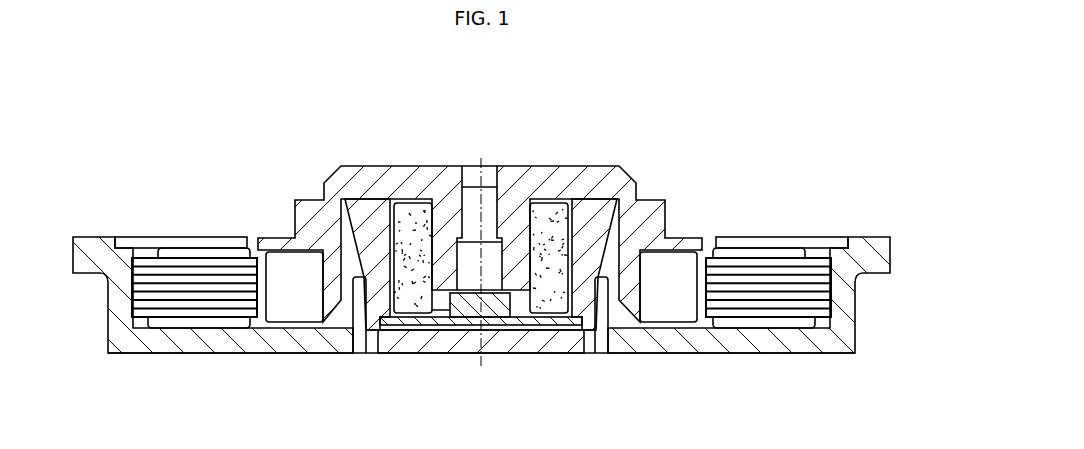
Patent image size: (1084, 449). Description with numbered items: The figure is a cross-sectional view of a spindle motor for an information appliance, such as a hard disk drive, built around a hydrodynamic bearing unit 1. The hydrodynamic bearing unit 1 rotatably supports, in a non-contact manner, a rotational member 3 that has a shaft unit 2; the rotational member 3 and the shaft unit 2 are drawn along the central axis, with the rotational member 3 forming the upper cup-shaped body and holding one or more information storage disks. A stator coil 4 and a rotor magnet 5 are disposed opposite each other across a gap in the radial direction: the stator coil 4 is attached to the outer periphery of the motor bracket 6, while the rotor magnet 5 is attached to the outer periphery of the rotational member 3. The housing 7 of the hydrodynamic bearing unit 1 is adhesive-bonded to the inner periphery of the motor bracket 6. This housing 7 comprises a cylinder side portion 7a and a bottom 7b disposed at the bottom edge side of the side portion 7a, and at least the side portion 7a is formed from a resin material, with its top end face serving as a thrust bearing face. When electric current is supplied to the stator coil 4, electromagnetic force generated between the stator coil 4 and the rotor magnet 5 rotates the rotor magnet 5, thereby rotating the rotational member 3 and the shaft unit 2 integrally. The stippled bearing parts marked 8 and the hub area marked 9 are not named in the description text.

The hydrodynamic bearing unit 1 is at (574, 158).
The shaft unit 2 is at (520, 242).
The rotational member 3 is at (386, 161).
The stator coil 4 is at (806, 253).
The rotor magnet 5 is at (678, 265).
The motor bracket 6 is at (191, 342).
The housing 7 is at (513, 362).
The side portion 7a is at (357, 300).
The bottom 7b is at (462, 343).
The bearing 8 is at (557, 296).
The rotor hub 9 is at (606, 163).